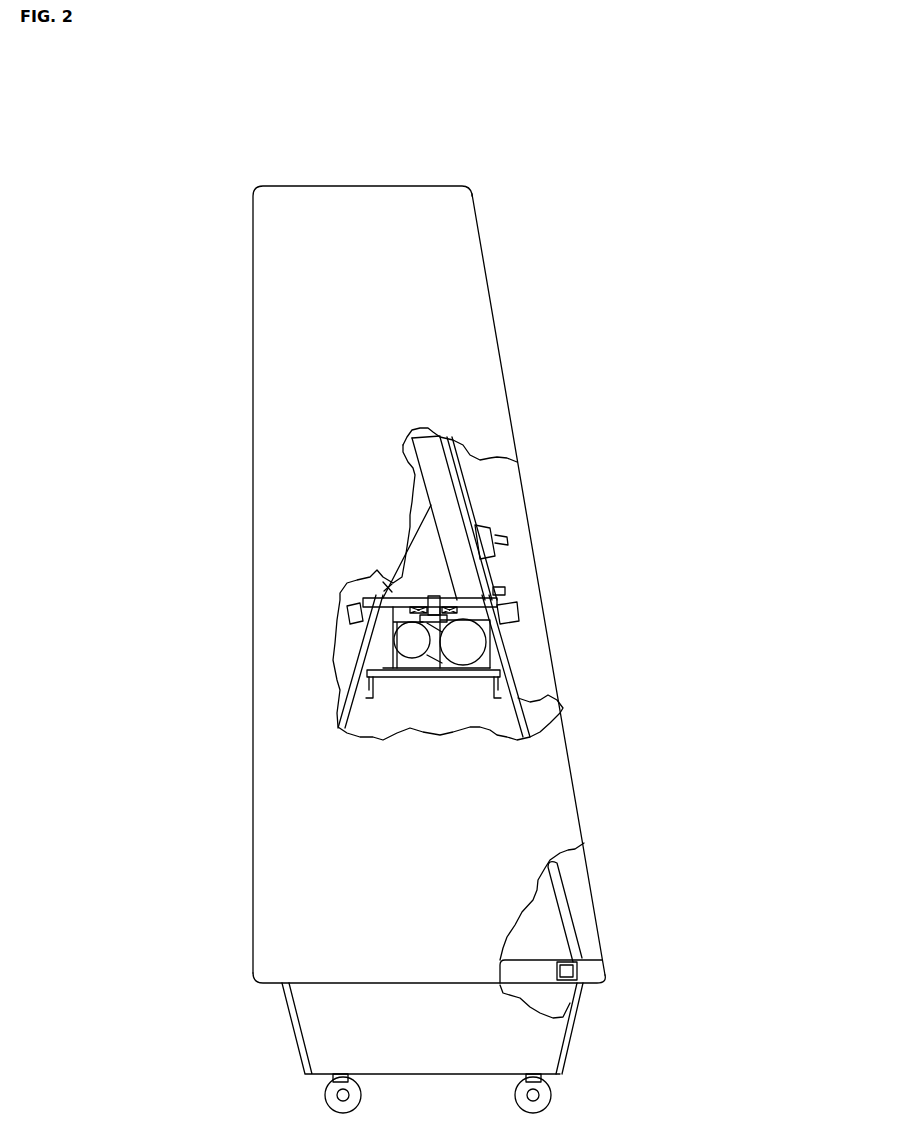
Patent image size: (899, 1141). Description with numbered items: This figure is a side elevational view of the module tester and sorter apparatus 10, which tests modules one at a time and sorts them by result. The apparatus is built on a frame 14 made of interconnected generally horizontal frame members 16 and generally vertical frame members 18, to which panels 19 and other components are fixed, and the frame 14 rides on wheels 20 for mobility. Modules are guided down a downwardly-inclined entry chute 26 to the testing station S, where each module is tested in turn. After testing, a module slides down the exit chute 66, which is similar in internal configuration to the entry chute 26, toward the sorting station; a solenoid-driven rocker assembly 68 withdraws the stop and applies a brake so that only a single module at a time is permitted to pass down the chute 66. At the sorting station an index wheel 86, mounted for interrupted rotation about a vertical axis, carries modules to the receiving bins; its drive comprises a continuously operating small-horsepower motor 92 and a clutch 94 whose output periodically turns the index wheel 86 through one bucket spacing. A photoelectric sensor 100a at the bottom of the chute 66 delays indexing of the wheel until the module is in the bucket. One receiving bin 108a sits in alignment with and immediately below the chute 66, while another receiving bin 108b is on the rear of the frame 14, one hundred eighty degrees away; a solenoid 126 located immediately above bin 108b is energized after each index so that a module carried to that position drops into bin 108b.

The module tester and sorter apparatus 10 is at (524, 373).
The frame 14 is at (573, 938).
The horizontal frame members 16 is at (535, 978).
The vertical frame members 18 is at (442, 493).
The panels 19 is at (562, 827).
The wheels 20 is at (325, 1095).
The entry chute 26 is at (470, 505).
The exit chute 66 is at (505, 590).
The rocker assembly 68 is at (520, 527).
The testing station S is at (507, 552).
The index wheel 86 is at (388, 592).
The motor 92 is at (486, 643).
The clutch 94 is at (395, 641).
The photoelectric sensor 100a is at (513, 600).
The receiving bin 108a is at (520, 697).
The receiving bin 108b is at (349, 690).
The solenoid 126 is at (355, 607).